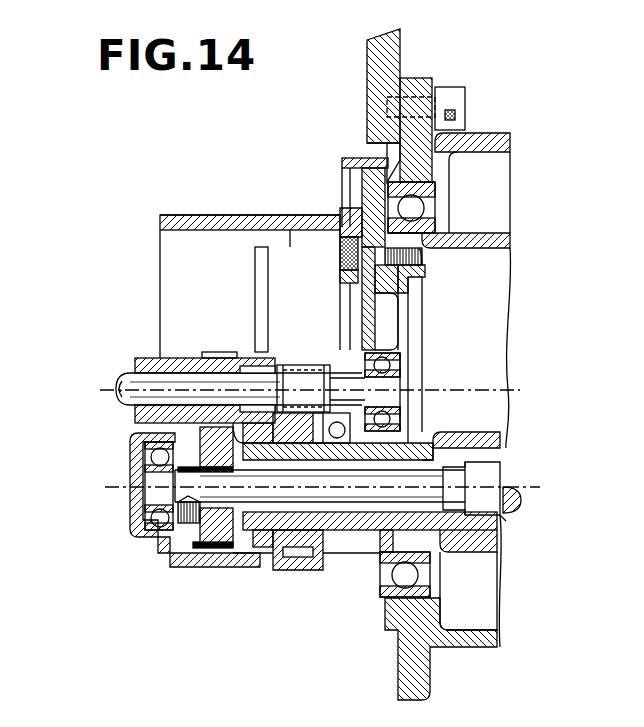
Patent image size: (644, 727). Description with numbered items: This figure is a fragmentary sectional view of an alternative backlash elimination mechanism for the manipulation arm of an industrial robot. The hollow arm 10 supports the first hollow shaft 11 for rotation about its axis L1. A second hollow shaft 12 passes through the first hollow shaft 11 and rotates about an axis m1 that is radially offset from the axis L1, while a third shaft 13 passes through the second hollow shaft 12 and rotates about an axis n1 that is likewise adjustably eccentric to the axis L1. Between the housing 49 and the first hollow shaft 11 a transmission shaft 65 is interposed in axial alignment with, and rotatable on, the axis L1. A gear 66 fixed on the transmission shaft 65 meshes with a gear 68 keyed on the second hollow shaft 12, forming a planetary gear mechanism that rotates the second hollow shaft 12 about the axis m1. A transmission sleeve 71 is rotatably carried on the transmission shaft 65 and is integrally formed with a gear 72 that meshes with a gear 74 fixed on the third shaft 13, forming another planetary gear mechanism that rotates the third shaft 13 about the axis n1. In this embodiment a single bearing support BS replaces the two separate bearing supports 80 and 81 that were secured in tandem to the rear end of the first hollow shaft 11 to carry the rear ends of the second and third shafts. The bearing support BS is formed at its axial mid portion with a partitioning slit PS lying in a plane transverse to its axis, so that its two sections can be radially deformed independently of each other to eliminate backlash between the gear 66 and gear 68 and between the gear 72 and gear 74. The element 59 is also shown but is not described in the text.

The housing 49 is at (395, 72).
The hollow arm 10 is at (485, 135).
The first hollow shaft 11 is at (480, 233).
The second hollow shaft 12 is at (470, 442).
The third shaft 13 is at (488, 472).
The axis of the second hollow shaft m1 is at (518, 492).
The axis of the third shaft n1 is at (540, 520).
The axis of the first hollow shaft L1 is at (480, 392).
The transmission shaft 65 is at (118, 375).
The gear 66 is at (302, 365).
The transmission sleeve 71 is at (133, 415).
The gear 72 is at (212, 352).
The gear 74 is at (213, 548).
The gear 68 is at (290, 553).
The bearing support 81 is at (158, 240).
The bearing support 80 is at (290, 247).
The bracket 59 is at (345, 175).
The bearing support BS is at (185, 215).
The partitioning slit PS is at (260, 278).